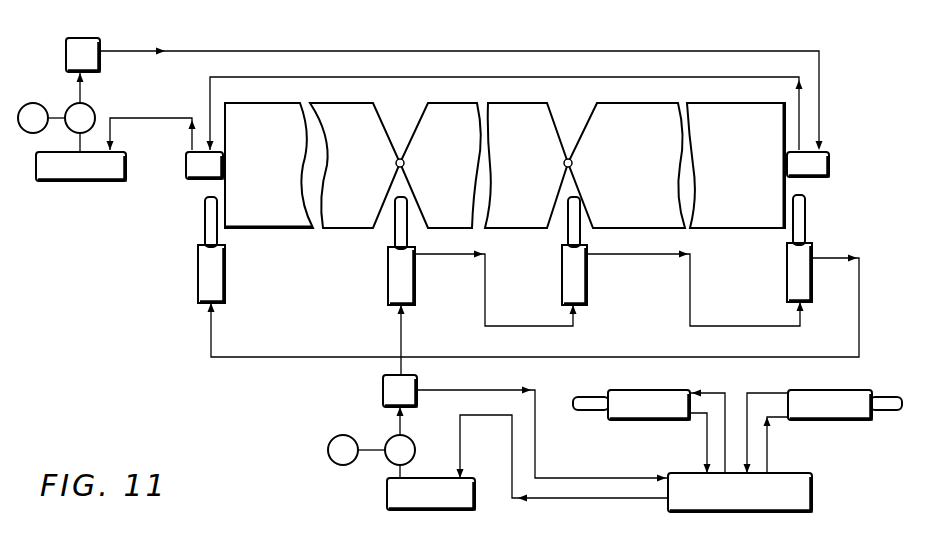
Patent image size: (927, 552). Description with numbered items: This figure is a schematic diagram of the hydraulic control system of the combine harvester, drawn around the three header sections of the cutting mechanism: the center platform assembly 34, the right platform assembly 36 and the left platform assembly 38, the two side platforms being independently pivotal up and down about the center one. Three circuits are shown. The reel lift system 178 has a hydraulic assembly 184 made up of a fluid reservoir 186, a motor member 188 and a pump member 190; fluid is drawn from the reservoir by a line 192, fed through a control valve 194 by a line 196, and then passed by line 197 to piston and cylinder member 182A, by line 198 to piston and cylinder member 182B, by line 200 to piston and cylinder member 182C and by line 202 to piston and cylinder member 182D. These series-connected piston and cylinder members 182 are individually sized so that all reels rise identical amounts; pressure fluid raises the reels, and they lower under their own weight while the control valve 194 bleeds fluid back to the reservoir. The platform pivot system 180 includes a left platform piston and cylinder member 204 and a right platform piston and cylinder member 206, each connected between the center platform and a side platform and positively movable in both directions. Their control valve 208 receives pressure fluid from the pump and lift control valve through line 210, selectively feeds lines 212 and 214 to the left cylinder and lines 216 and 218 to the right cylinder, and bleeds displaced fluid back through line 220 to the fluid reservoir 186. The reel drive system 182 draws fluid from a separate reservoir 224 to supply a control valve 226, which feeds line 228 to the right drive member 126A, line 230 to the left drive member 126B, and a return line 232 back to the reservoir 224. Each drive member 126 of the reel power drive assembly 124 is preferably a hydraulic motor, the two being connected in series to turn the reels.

The center platform assembly 34 is at (523, 184).
The right platform assembly 36 is at (655, 184).
The left platform assembly 38 is at (285, 184).
The reel power drive assembly 124 is at (145, 233).
The drive member 126 is at (527, 174).
The right drive member 126A is at (783, 164).
The left drive member 126B is at (222, 166).
The reel lift system 178 is at (345, 495).
The platform pivot system 180 is at (737, 392).
The piston and cylinder member 182 is at (470, 232).
The piston and cylinder member 182A is at (388, 280).
The piston and cylinder member 182B is at (562, 295).
The piston and cylinder member 182C is at (786, 286).
The piston and cylinder member 182D is at (198, 287).
The hydraulic assembly 184 is at (338, 434).
The fluid reservoir 186 is at (477, 493).
The motor member 188 is at (330, 443).
The pump member 190 is at (383, 457).
The line 192 is at (395, 468).
The control valve 194 is at (383, 390).
The line 196 is at (397, 423).
The line 197 is at (400, 333).
The line 198 is at (455, 256).
The line 200 is at (638, 256).
The line 202 is at (602, 356).
The left platform piston and cylinder member 204 is at (670, 416).
The right platform piston and cylinder member 206 is at (850, 416).
The control valve 208 is at (805, 500).
The line 210 is at (458, 390).
The line 212 is at (722, 417).
The line 214 is at (707, 445).
The line 216 is at (767, 435).
The line 218 is at (748, 444).
The line 220 is at (505, 415).
The reservoir 224 is at (108, 182).
The control valve 226 is at (100, 40).
The line 228 is at (68, 100).
The line 230 is at (416, 77).
The return line 232 is at (182, 116).